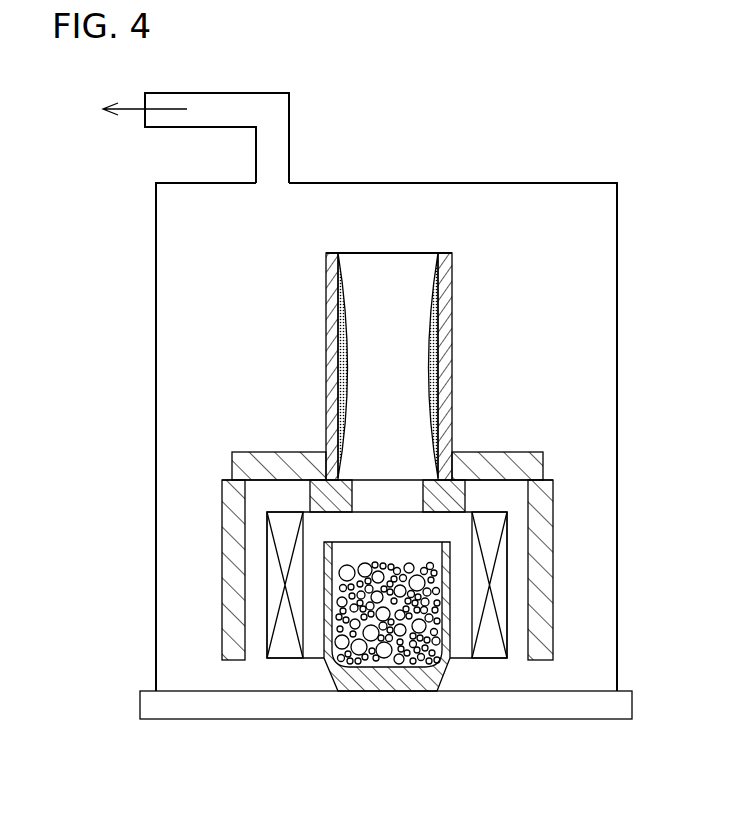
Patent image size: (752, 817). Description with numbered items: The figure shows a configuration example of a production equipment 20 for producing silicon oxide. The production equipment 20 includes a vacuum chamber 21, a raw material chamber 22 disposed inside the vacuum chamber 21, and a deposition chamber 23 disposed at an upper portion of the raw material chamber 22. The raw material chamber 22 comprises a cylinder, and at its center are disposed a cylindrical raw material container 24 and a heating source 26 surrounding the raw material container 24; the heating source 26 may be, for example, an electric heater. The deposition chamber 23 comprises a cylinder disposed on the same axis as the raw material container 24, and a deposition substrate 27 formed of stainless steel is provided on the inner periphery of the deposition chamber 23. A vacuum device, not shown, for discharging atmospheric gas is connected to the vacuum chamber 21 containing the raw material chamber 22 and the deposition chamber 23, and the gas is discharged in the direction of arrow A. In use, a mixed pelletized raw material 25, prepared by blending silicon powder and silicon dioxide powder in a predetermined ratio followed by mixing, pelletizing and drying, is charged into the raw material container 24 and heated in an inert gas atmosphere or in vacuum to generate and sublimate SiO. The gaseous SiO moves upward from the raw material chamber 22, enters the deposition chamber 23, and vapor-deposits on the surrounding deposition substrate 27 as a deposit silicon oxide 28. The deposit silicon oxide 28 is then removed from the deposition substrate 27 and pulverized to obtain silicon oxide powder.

The production equipment 20 is at (113, 229).
The vacuum chamber 21 is at (156, 316).
The raw material chamber 22 is at (550, 537).
The deposition chamber 23 is at (413, 252).
The raw material container 24 is at (362, 683).
The mixed pelletized raw material 25 is at (405, 662).
The heating source 26 is at (490, 648).
The deposition substrate 27 is at (447, 304).
The deposit silicon oxide 28 is at (340, 380).